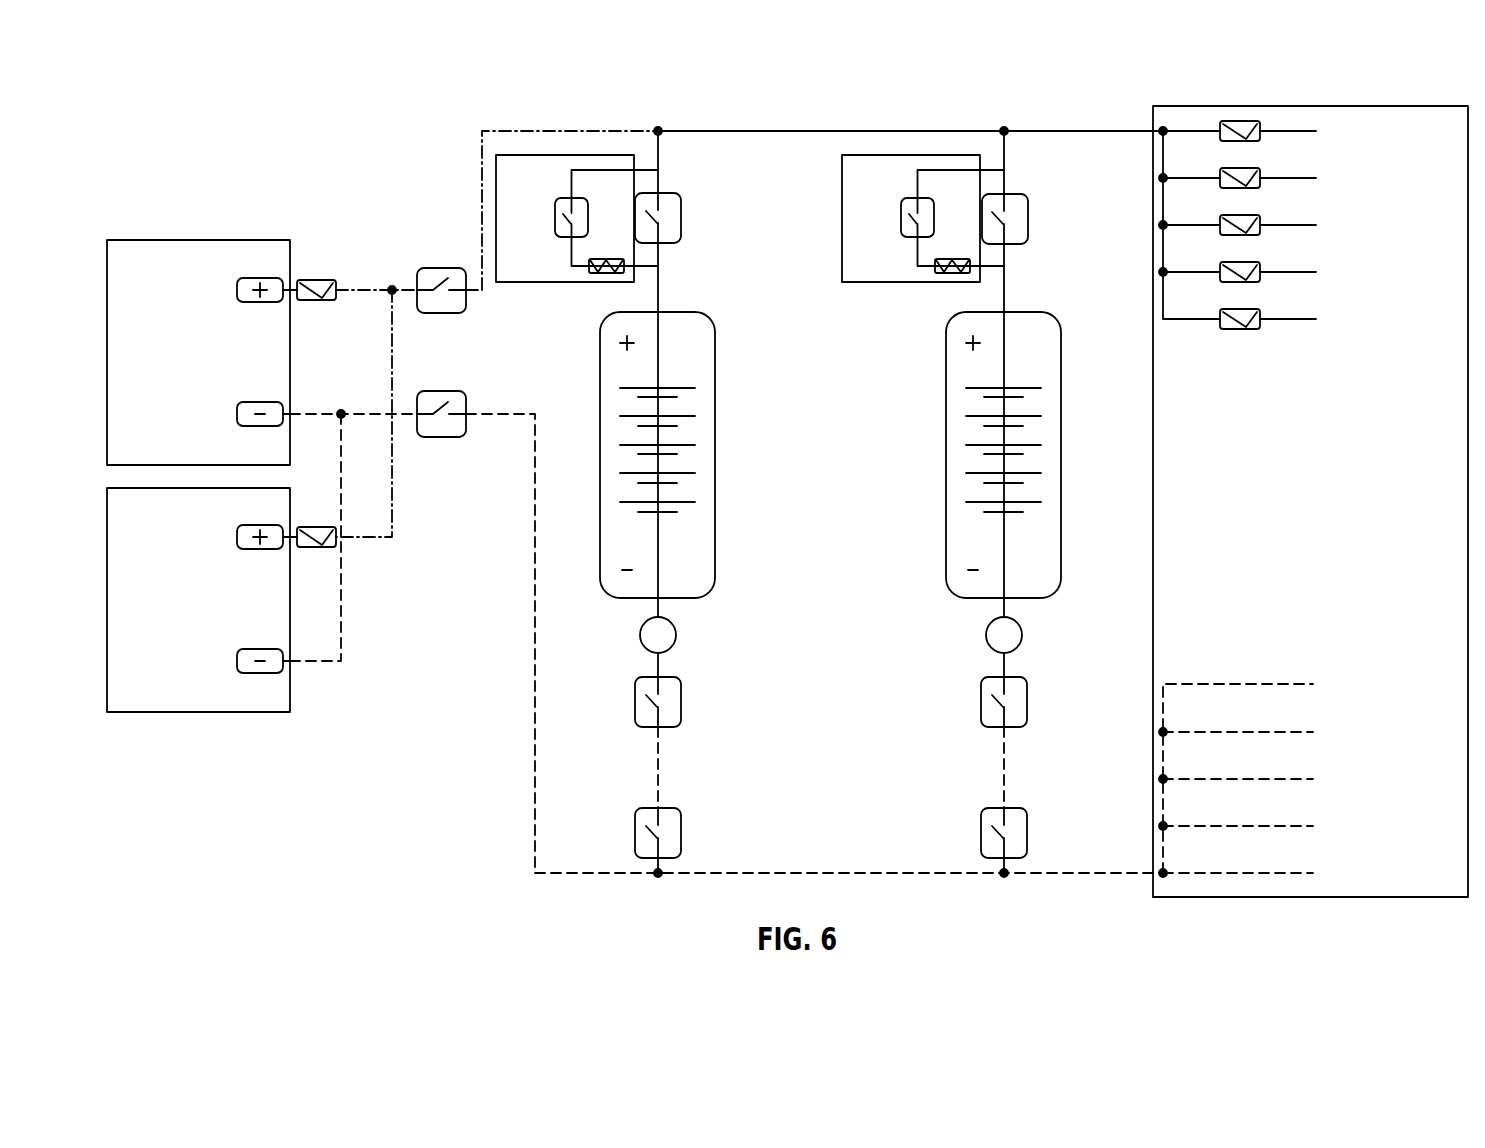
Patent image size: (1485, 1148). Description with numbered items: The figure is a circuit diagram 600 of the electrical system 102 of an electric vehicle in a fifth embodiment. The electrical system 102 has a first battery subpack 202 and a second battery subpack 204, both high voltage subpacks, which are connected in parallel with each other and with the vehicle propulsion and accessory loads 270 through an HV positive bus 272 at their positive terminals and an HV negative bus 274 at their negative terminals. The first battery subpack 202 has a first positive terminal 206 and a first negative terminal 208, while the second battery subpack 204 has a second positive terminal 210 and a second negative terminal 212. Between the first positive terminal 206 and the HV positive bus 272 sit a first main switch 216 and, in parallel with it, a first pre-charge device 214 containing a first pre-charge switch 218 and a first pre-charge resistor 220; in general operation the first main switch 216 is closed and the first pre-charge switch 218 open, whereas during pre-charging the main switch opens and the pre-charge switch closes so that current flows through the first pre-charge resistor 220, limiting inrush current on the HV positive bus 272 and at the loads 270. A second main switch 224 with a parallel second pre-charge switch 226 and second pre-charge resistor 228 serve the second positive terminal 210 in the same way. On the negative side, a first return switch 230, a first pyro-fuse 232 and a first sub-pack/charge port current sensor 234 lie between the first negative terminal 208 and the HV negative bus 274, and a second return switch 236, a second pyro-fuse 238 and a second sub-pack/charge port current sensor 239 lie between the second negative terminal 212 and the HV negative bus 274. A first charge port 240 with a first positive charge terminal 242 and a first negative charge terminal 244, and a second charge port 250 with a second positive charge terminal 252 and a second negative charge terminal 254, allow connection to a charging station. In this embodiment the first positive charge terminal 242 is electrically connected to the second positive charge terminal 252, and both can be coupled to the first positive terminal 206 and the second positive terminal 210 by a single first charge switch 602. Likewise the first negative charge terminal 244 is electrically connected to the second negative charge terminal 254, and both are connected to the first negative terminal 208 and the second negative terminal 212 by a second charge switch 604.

The circuit diagram 600 is at (175, 79).
The electrical system 102 is at (1135, 83).
The first battery subpack 202 is at (715, 532).
The second battery subpack 204 is at (1061, 532).
The first positive terminal 206 is at (612, 343).
The first negative terminal 208 is at (625, 582).
The second positive terminal 210 is at (957, 343).
The second negative terminal 212 is at (971, 582).
The first pre-charge device 214 is at (496, 168).
The first main switch 216 is at (668, 193).
The first pre-charge switch 218 is at (570, 197).
The first pre-charge resistor 220 is at (616, 258).
The second main switch 224 is at (953, 155).
The second pre-charge switch 226 is at (917, 198).
The second pre-charge resistor 228 is at (964, 258).
The first return switch 230 is at (635, 833).
The first pyro-fuse 232 is at (635, 702).
The first sub-pack/charge port current sensor 234 is at (646, 648).
The second return switch 236 is at (981, 833).
The second pyro-fuse 238 is at (981, 702).
The second sub-pack/charge port current sensor 239 is at (992, 648).
The first charge port 240 is at (243, 240).
The first positive charge terminal 242 is at (256, 278).
The first negative charge terminal 244 is at (257, 427).
The second charge port 250 is at (174, 712).
The second positive charge terminal 252 is at (256, 525).
The second negative charge terminal 254 is at (257, 674).
The vehicle propulsion and accessory loads 270 is at (1390, 106).
The HV positive bus 272 is at (745, 131).
The HV negative bus 274 is at (787, 867).
The first charge switch 602 is at (465, 298).
The second charge switch 604 is at (441, 437).